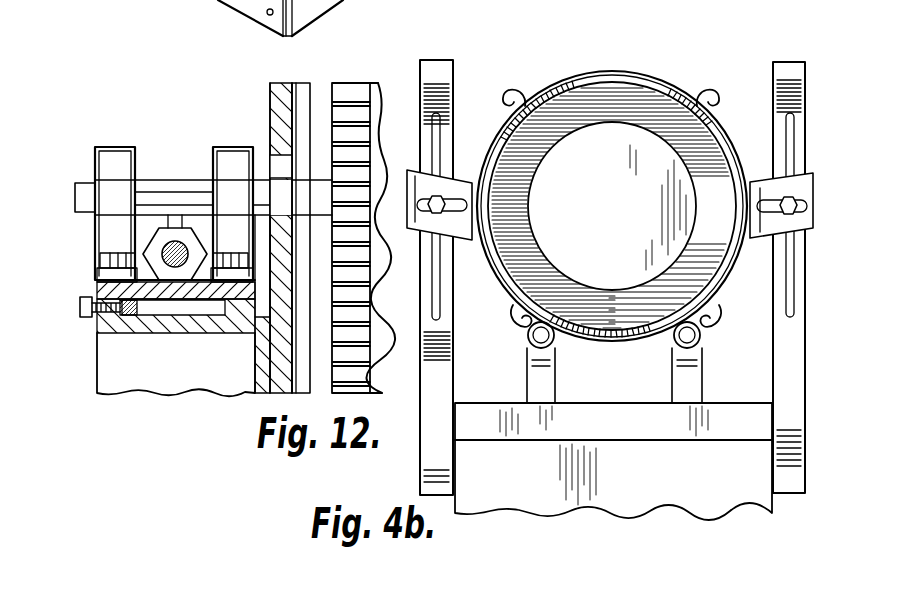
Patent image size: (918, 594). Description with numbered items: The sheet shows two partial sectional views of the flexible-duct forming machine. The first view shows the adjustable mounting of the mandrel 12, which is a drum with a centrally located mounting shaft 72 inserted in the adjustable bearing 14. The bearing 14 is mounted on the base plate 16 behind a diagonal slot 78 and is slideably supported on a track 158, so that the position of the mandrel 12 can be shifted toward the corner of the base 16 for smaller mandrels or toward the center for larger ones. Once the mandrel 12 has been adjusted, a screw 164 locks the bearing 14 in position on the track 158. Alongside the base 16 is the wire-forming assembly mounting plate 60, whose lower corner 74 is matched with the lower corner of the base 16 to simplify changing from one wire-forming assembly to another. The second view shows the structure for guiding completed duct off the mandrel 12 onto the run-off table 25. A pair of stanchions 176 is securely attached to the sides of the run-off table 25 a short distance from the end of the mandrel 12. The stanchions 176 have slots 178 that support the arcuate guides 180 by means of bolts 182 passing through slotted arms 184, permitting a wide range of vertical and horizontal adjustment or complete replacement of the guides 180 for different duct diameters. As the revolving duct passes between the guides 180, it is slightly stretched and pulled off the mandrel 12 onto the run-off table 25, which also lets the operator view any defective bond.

In FIG. 4B, the mandrel 12 is at (563, 105).
In FIG. 12, the adjustable bearing 14 is at (115, 147).
In FIG. 12, the base plate 16 is at (270, 105).
In FIG. 4B, the run-off table 25 is at (605, 403).
In FIG. 12, the wire-forming assembly mounting plate 60 is at (298, 85).
In FIG. 12, the mounting shaft 72 is at (184, 180).
In FIG. 12, the lower corner 74 is at (290, 38).
In FIG. 12, the diagonal slot 78 is at (283, 165).
In FIG. 12, the track 158 is at (100, 335).
In FIG. 12, the screw 164 is at (84, 298).
In FIG. 4B, the stanchions 176 is at (442, 60).
In FIG. 4B, the slots 178 is at (438, 113).
In FIG. 4B, the arcuate guides 180 is at (497, 126).
In FIG. 4B, the bolts 182 is at (437, 218).
In FIG. 4B, the slotted arms 184 is at (403, 205).